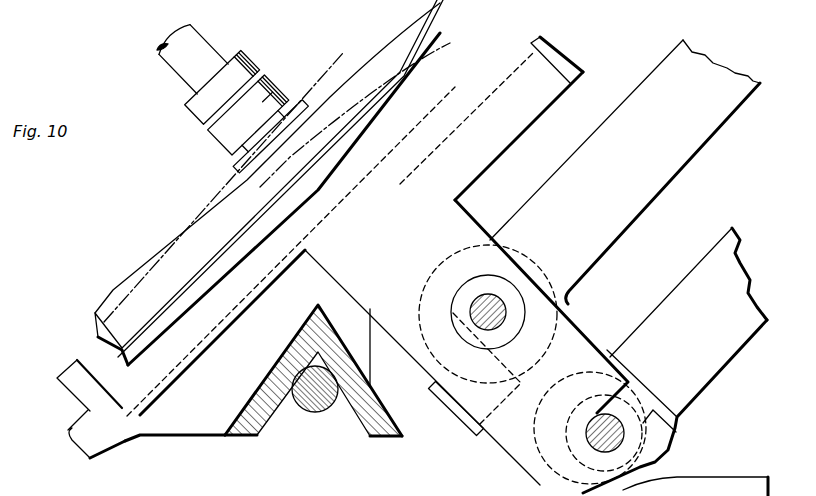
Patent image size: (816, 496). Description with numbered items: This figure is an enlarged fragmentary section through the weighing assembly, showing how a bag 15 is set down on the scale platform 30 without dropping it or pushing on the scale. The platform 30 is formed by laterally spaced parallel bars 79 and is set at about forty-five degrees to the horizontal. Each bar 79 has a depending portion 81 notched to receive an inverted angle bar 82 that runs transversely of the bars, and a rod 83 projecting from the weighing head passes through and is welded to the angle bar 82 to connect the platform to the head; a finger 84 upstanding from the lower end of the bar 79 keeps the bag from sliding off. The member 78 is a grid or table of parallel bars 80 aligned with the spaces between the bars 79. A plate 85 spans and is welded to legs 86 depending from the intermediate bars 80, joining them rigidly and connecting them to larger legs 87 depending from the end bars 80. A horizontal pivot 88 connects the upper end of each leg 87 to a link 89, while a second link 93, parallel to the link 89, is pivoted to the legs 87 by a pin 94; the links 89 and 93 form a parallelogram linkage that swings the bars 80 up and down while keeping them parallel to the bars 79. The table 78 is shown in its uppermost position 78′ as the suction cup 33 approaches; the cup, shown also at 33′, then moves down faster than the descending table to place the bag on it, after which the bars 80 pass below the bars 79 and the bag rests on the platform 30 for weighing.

The bag 15 is at (187, 245).
The scale platform 30 is at (267, 270).
The suction cup 33 is at (237, 171).
The suction cup (raised position) 33′ is at (312, 58).
The member (table) 78 is at (533, 37).
The table (uppermost position) 78′ is at (450, 43).
The bar 79 is at (138, 437).
The bar 80 is at (83, 440).
The depending portion 81 is at (365, 340).
The angle bar 82 is at (382, 437).
The rod 83 is at (313, 410).
The finger 84 is at (78, 370).
The plate 85 is at (468, 420).
The leg 86 is at (505, 403).
The leg 87 is at (522, 462).
The pivot 88 is at (485, 297).
The link 89 is at (556, 186).
The link 93 is at (682, 300).
The pin 94 is at (598, 417).